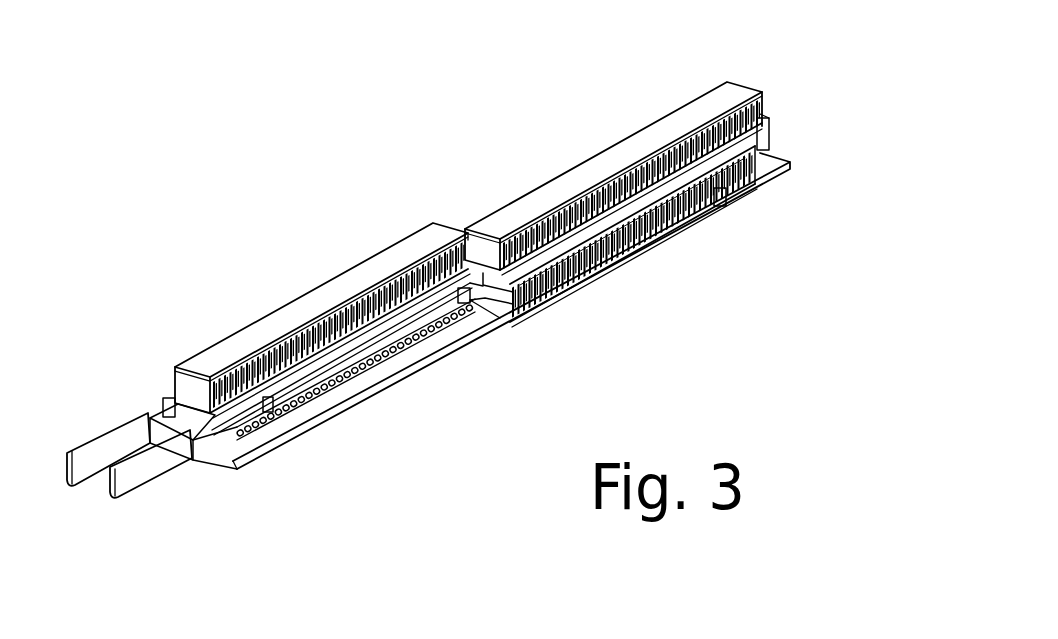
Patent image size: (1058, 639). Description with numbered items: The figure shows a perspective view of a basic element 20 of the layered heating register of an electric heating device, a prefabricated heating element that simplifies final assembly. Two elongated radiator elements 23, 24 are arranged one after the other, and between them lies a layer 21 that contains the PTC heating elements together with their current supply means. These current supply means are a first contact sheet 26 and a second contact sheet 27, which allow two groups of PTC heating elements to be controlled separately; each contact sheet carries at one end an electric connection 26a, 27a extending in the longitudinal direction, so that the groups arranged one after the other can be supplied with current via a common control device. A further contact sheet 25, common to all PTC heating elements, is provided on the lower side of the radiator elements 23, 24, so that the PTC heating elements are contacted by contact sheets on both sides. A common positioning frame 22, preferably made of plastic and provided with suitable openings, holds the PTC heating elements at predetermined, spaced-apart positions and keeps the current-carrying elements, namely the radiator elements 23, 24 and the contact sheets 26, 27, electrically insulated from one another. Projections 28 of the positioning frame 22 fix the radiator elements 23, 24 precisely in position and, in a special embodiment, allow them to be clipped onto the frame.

The basic element 20 is at (354, 72).
The layer 21 is at (790, 116).
The positioning frame 22 is at (575, 283).
The radiator element 23 is at (280, 323).
The radiator element 24 is at (595, 166).
The contact sheet 25 is at (384, 397).
The first contact sheet 26 is at (170, 400).
The electric connection 26a is at (90, 454).
The second contact sheet 27 is at (406, 322).
The electric connection 27a is at (150, 469).
The projections 28 is at (273, 411).